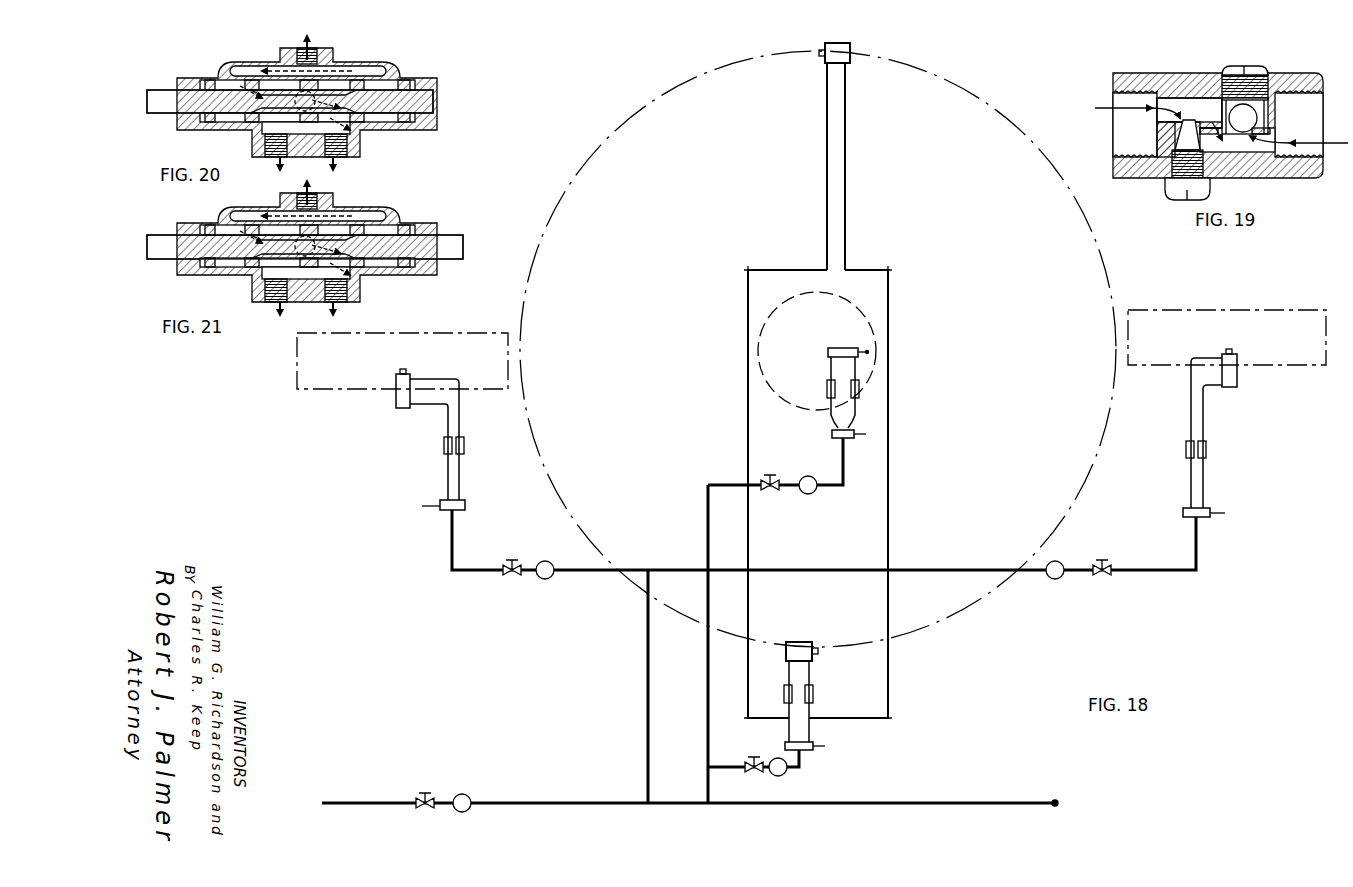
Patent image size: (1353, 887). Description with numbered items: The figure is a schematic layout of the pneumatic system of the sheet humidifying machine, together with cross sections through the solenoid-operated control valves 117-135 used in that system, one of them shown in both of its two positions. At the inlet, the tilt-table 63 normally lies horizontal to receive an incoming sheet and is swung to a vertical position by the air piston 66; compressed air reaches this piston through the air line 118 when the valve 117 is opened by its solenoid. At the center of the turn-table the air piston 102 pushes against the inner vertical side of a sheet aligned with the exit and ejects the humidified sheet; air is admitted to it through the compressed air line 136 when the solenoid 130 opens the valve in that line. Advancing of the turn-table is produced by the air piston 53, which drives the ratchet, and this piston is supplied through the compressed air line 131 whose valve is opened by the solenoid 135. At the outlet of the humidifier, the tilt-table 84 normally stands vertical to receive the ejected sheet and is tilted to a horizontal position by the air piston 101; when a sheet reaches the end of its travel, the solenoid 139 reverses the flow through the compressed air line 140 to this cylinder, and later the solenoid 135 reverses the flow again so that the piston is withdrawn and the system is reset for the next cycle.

In FIG. 20, the solenoid-operated control valves 117-135 is at (386, 68).
In FIG. 21, the solenoid-operated control valves 117-135 is at (372, 207).
In FIG. 18, the air piston 53 is at (851, 52).
In FIG. 18, the tilt-table 63 is at (432, 333).
In FIG. 18, the air piston 66 is at (395, 406).
In FIG. 18, the tilt-table 84 is at (1206, 310).
In FIG. 18, the air piston 101 is at (1237, 382).
In FIG. 18, the air piston 102 is at (834, 346).
In FIG. 18, the valve 117 is at (465, 506).
In FIG. 18, the air line 118 is at (455, 556).
In FIG. 18, the solenoid 130 is at (831, 434).
In FIG. 18, the compressed air line 131 is at (747, 422).
In FIG. 18, the solenoid 135 is at (808, 752).
In FIG. 18, the compressed air line 136 is at (858, 409).
In FIG. 18, the solenoid 139 is at (1183, 511).
In FIG. 18, the compressed air line 140 is at (1191, 412).